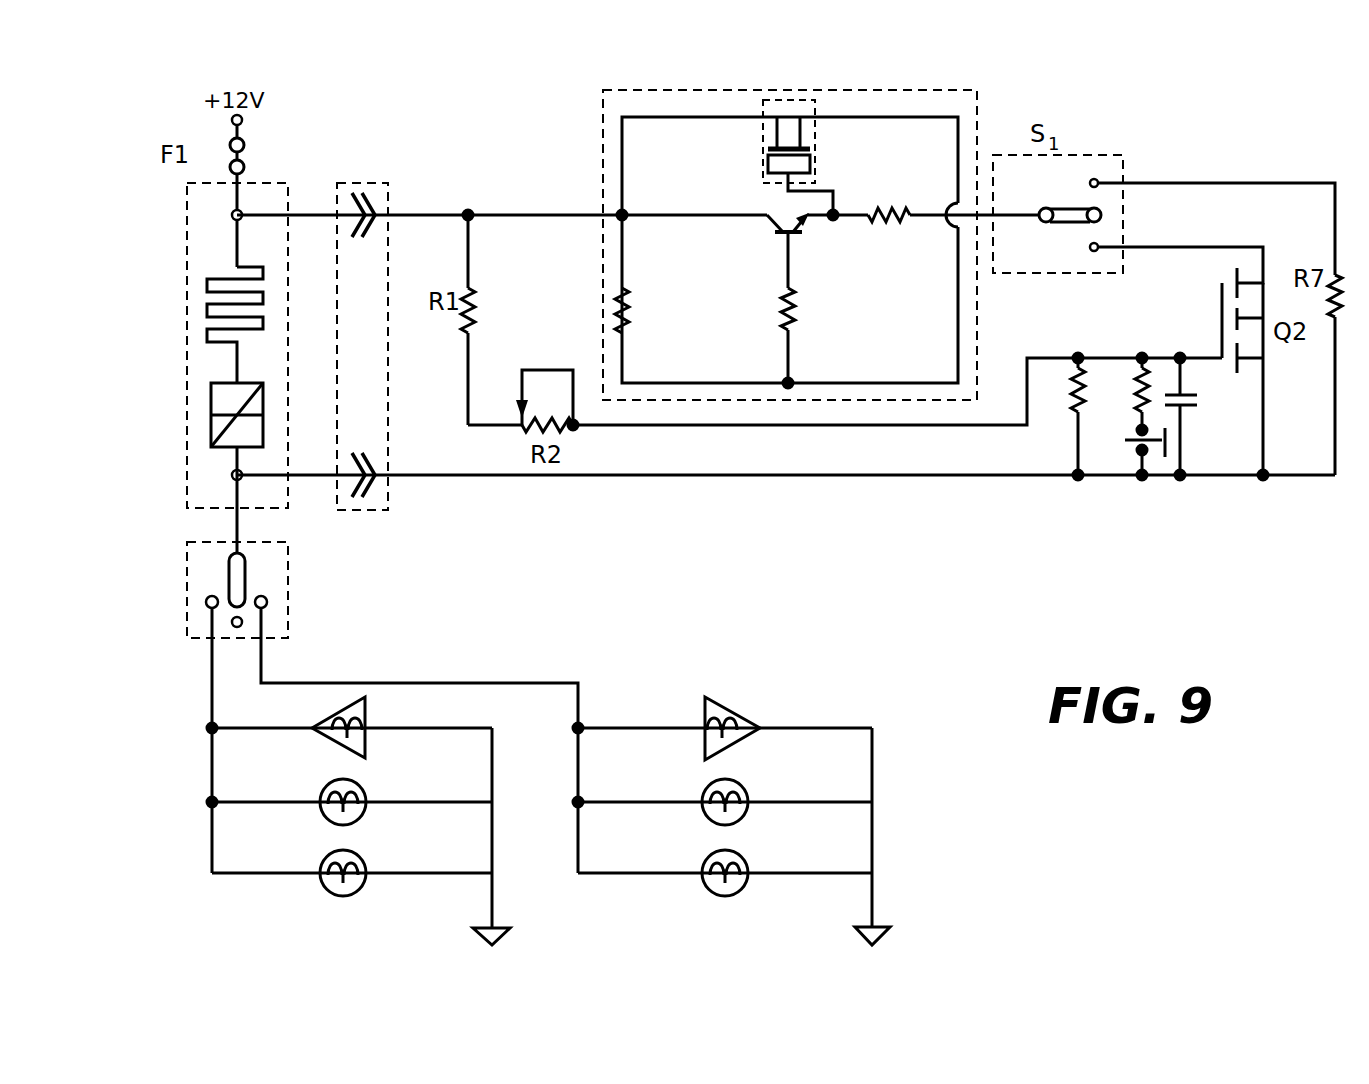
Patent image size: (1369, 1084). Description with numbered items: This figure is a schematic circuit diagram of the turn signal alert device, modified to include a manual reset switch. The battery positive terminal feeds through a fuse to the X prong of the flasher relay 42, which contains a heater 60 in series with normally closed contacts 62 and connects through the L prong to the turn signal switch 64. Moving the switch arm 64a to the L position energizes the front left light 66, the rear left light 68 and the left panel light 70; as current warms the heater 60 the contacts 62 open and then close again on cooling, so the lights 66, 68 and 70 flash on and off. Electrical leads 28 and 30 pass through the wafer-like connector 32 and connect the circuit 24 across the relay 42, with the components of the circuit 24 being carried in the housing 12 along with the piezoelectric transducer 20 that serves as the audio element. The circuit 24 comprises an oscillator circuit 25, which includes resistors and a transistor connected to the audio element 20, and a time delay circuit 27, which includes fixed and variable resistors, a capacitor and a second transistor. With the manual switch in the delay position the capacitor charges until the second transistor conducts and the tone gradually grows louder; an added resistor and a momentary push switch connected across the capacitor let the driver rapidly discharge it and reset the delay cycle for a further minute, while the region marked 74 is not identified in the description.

The housing 12 is at (172, 307).
The piezoelectric transducer 20 is at (790, 123).
The circuit 24 is at (843, 486).
The oscillator circuit 25 is at (594, 126).
The time delay circuit 27 is at (729, 442).
The electrical lead 28 is at (428, 213).
The electrical lead 30 is at (475, 477).
The wafer-like connector 32 is at (388, 425).
The flasher relay 42 is at (268, 182).
The heater 60 is at (220, 277).
The normally closed contacts 62 is at (212, 427).
The turn signal switch 64 is at (288, 627).
The switch arm 64a is at (245, 585).
The front left light 66 is at (363, 790).
The rear left light 68 is at (357, 862).
The left panel light 70 is at (365, 707).
The timing circuit 74 is at (1004, 392).